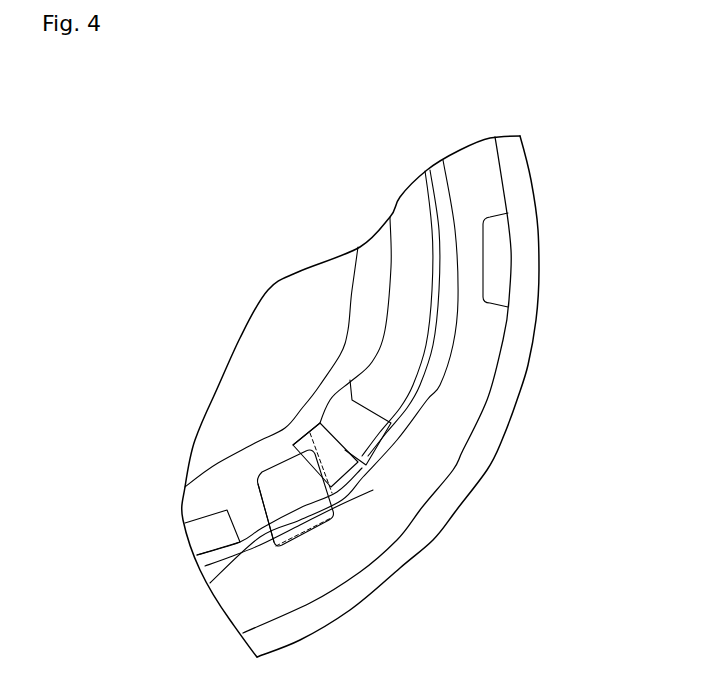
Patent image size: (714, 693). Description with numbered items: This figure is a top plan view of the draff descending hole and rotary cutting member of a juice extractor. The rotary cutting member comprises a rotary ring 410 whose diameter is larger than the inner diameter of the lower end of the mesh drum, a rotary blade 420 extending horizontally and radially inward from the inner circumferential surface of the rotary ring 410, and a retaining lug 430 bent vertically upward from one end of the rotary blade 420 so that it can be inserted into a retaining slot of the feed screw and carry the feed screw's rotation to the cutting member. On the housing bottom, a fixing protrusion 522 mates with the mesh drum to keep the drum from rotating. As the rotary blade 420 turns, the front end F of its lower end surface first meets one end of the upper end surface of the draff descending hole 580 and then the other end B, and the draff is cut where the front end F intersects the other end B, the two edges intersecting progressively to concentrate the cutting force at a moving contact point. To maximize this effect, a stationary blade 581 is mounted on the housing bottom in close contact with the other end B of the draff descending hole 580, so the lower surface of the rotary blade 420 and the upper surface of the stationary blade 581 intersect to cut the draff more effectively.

The rotary ring 410 is at (443, 330).
The rotary blade 420 is at (333, 465).
The retaining lug 430 is at (335, 463).
The fixing protrusion 522 is at (502, 253).
The draff descending hole 580 is at (352, 421).
The stationary blade 581 is at (292, 493).
The front end of the lower end surface of the rotary blade F is at (328, 487).
The other end of the upper end surface of the draff descending hole B is at (330, 480).